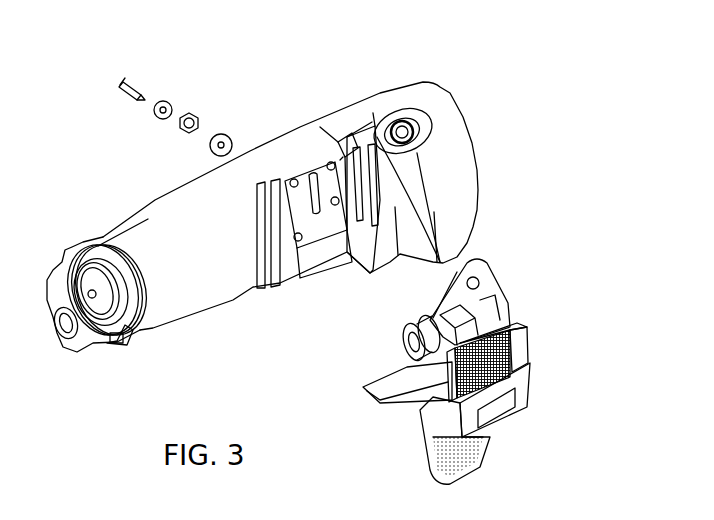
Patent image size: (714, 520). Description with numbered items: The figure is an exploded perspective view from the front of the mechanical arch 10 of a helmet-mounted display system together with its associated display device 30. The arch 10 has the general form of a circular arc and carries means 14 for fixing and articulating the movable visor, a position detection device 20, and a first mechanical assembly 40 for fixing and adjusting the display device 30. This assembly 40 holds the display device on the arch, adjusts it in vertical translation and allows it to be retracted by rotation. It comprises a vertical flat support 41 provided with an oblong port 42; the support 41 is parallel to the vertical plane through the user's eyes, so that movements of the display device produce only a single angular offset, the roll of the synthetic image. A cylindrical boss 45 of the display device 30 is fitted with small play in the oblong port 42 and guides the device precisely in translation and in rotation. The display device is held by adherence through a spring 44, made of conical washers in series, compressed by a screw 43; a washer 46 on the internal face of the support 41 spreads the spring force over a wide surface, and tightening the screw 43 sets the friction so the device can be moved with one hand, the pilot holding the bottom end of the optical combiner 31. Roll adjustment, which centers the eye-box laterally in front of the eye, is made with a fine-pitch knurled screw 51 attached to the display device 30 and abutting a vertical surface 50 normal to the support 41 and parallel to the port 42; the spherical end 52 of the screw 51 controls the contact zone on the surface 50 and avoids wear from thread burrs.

The mechanical arch 10 is at (155, 207).
The means for fixing and articulating the movable visor 14 is at (125, 325).
The position detection device 20 is at (403, 120).
The display device 30 is at (527, 390).
The optical combiner 31 is at (478, 457).
The first mechanical assembly for fixing and adjusting the display device 40 is at (302, 316).
The vertical flat support 41 is at (318, 220).
The oblong port 42 is at (312, 175).
The screw 43 is at (140, 92).
The spring 44 is at (188, 113).
The cylindrical boss 45 is at (480, 280).
The washer 46 is at (220, 134).
The vertical surface 50 is at (349, 266).
The fine-pitch knurled screw 51 is at (407, 347).
The spherical end of the abutment screw 52 is at (507, 297).